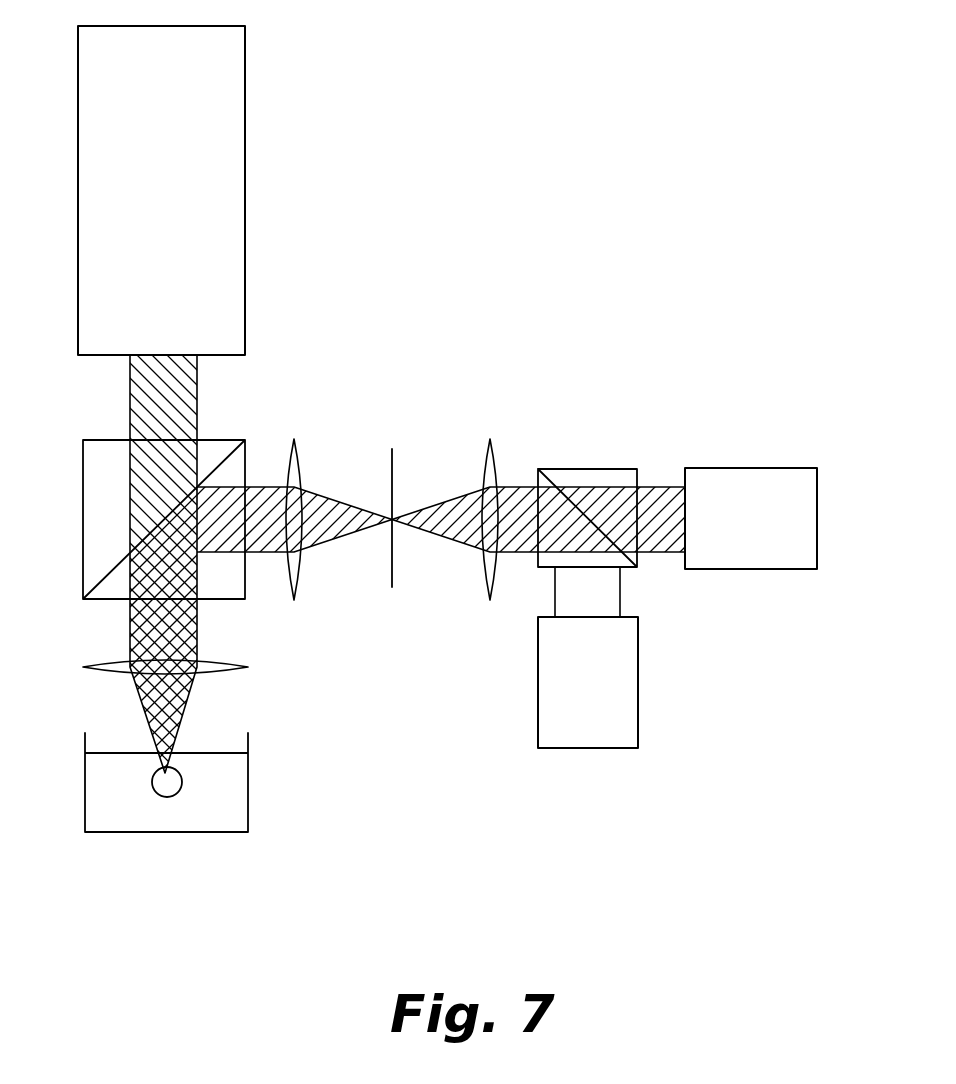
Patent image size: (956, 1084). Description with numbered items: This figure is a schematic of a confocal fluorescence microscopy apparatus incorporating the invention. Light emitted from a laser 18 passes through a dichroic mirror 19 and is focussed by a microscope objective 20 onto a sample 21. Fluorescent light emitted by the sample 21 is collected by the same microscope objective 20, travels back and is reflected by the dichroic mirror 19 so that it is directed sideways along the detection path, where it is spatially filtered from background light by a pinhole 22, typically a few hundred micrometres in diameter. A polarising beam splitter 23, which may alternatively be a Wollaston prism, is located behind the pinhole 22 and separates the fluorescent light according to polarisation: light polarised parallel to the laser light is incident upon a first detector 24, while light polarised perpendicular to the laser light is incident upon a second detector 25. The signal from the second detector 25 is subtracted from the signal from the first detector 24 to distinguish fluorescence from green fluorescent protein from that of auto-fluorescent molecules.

The laser 18 is at (152, 238).
The dichroic mirror 19 is at (97, 500).
The microscope objective 20 is at (108, 661).
The sample 21 is at (175, 782).
The pinhole 22 is at (392, 587).
The polarising beam splitter 23 is at (565, 468).
The first detector 24 is at (802, 500).
The second detector 25 is at (617, 705).